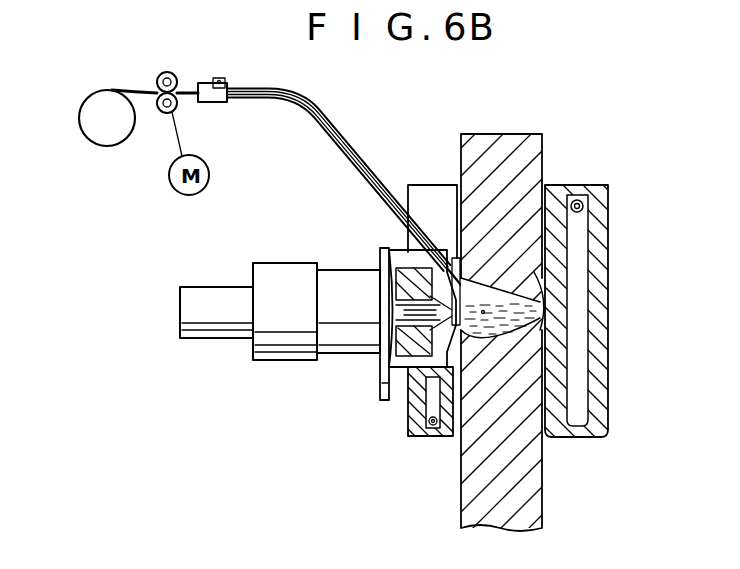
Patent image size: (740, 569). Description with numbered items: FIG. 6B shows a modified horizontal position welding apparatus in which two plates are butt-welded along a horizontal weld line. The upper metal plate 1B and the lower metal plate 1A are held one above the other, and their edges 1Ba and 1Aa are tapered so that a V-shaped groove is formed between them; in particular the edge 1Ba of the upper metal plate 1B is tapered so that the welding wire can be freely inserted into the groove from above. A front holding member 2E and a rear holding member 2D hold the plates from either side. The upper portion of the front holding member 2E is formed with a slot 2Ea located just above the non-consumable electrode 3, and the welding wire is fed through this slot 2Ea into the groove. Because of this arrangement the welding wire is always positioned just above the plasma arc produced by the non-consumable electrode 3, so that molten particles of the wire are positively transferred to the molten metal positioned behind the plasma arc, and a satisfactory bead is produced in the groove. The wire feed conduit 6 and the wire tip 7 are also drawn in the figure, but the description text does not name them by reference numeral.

The lower metal plate 1A is at (532, 482).
The upper metal plate 1B is at (508, 146).
The edge of lower metal plate 1Aa is at (503, 328).
The edge of upper metal plate 1Ba is at (545, 281).
The rear holding member 2D is at (606, 203).
The front holding member 2E is at (412, 417).
The slot 2Ea is at (430, 196).
The non-consumable electrode 3 is at (350, 290).
The filler wire conduit 6 is at (347, 138).
The filler wire tip 7 is at (473, 276).